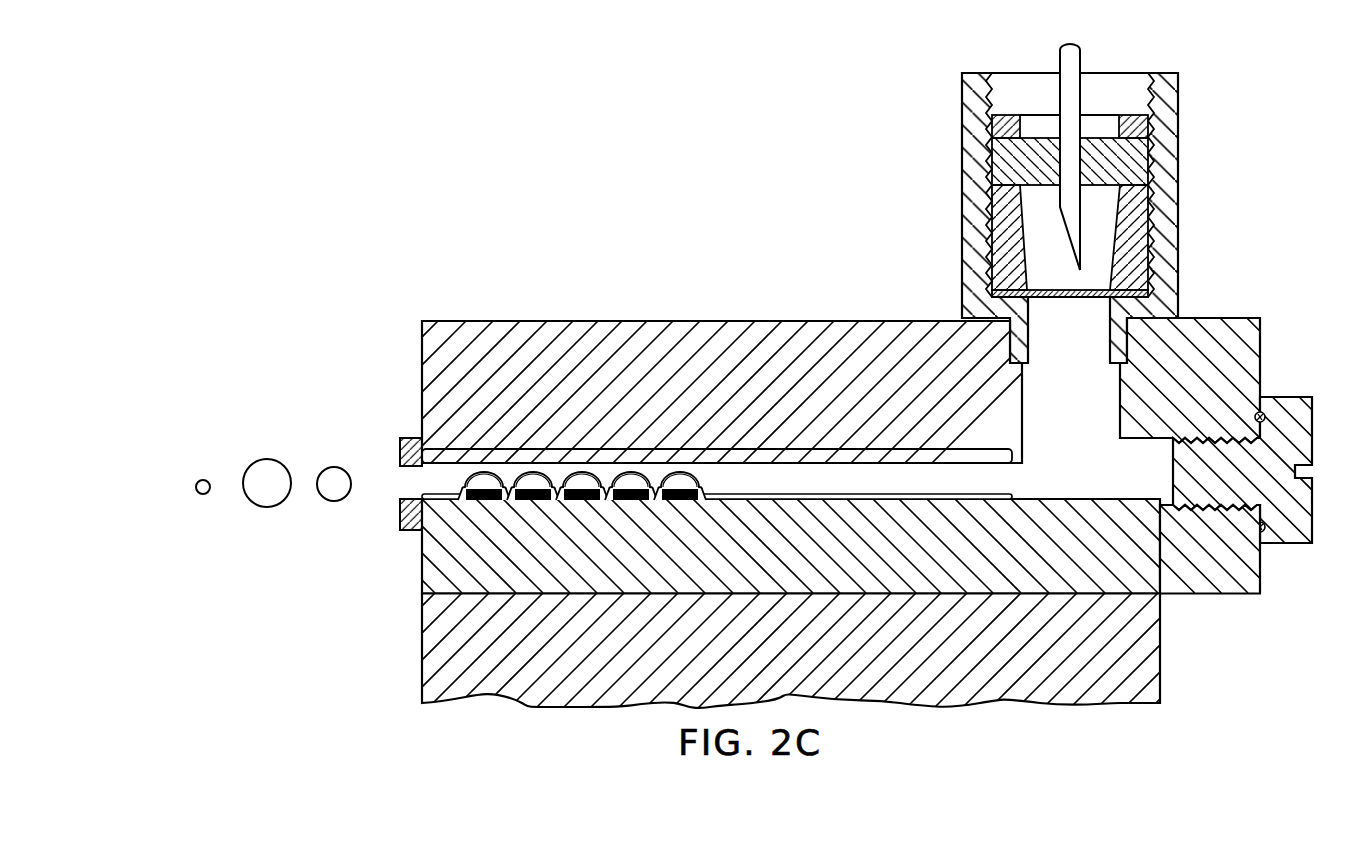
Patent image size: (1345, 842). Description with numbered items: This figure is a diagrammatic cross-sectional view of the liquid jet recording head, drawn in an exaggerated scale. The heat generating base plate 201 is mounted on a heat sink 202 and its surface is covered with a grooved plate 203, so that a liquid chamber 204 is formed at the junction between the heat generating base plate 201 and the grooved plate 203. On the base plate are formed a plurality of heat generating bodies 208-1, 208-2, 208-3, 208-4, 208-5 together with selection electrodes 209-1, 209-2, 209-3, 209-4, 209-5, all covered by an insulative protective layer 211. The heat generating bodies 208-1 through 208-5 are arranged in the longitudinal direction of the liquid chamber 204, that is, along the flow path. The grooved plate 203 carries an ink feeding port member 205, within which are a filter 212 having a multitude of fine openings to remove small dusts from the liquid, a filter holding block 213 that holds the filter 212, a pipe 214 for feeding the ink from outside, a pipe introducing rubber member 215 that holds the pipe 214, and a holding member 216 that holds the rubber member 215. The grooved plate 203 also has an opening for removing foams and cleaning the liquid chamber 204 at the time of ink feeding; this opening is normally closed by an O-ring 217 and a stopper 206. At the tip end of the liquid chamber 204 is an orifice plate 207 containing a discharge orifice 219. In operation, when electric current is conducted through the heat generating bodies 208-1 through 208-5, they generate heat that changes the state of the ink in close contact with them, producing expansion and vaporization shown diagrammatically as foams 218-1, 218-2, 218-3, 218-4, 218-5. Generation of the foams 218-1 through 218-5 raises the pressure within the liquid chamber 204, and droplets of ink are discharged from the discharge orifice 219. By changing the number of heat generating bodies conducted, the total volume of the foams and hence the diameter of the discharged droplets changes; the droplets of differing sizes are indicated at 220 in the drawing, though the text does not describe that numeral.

The heat generating base plate 201 is at (432, 576).
The heat sink 202 is at (440, 669).
The grooved plate 203 is at (714, 330).
The liquid chamber 204 is at (846, 448).
The ink feeding port member 205 is at (937, 153).
The stopper 206 is at (1294, 528).
The orifice plate 207 is at (401, 441).
The heat generating body 208-1 is at (481, 503).
The heat generating body 208-2 is at (540, 503).
The heat generating body 208-3 is at (600, 503).
The heat generating body 208-4 is at (655, 503).
The heat generating body 208-5 is at (702, 502).
The selection electrode 209-1 is at (468, 501).
The selection electrode 209-2 is at (518, 501).
The selection electrode 209-3 is at (600, 512).
The selection electrode 209-4 is at (618, 501).
The selection electrode 209-5 is at (705, 499).
The insulative protective layer 211 is at (430, 496).
The filter 212 is at (1146, 294).
The filter holding block 213 is at (1142, 208).
The pipe 214 is at (1062, 61).
The pipe introducing rubber member 215 is at (1140, 157).
The holding member 216 is at (1140, 118).
The O-ring 217 is at (1264, 412).
The foam 218-1 is at (480, 471).
The foam 218-2 is at (531, 471).
The foam 218-3 is at (586, 471).
The foam 218-4 is at (637, 471).
The foam 218-5 is at (688, 471).
The discharge orifice 219 is at (403, 478).
The sample drops 220 is at (355, 512).